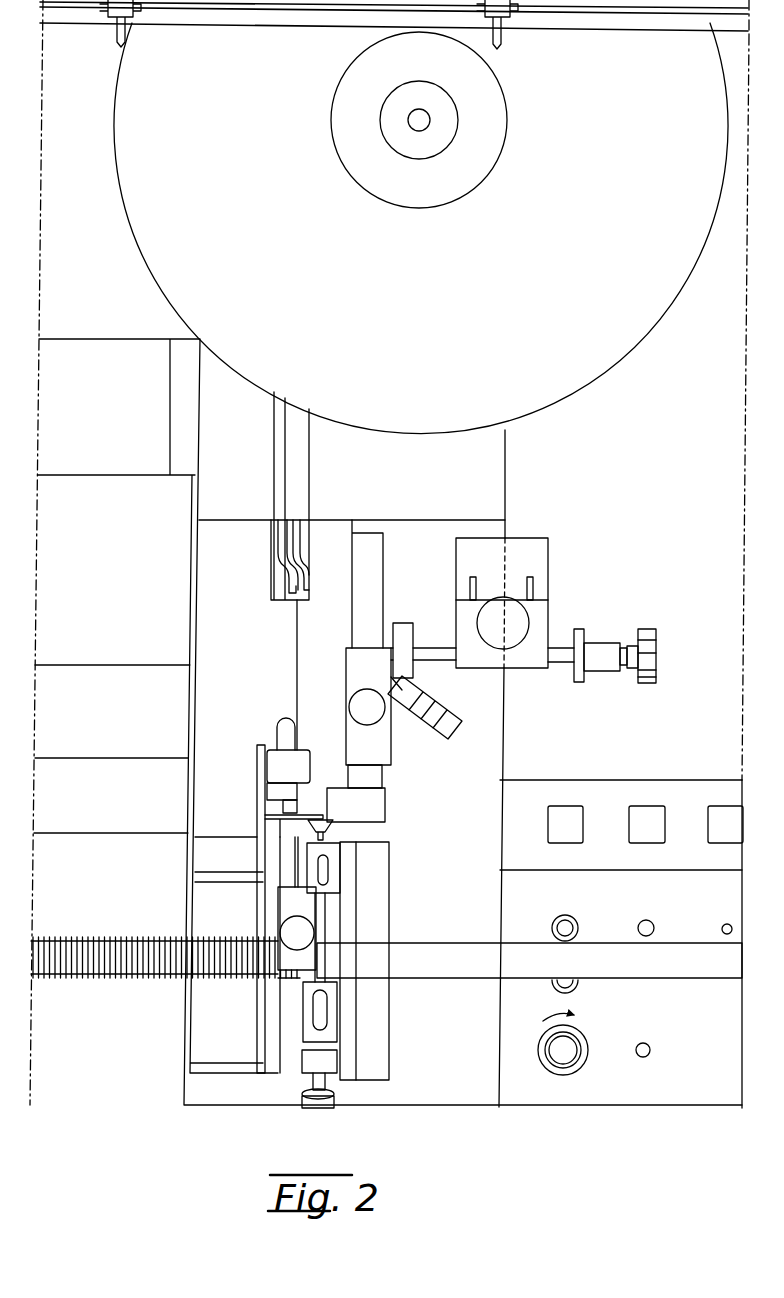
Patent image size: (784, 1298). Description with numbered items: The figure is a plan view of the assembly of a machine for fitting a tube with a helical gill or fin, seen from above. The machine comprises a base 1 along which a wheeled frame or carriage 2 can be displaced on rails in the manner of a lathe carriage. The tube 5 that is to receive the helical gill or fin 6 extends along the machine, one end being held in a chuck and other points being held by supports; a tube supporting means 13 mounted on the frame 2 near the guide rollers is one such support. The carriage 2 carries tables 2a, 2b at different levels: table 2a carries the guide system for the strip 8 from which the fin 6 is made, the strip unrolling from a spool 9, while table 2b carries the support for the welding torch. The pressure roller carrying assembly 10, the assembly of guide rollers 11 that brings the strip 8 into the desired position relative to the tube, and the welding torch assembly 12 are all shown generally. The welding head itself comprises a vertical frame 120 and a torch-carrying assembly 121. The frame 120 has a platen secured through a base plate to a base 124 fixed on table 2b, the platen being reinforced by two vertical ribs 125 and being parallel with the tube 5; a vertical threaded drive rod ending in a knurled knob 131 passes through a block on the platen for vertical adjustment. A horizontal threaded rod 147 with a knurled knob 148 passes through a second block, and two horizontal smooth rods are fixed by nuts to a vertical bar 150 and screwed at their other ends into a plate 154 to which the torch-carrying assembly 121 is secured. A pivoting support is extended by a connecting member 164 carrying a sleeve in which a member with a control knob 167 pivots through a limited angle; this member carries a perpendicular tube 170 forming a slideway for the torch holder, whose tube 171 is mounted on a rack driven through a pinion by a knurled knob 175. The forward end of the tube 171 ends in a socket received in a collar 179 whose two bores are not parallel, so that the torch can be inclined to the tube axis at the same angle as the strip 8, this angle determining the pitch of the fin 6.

The base 1 is at (87, 680).
The frame or carriage 2 is at (499, 746).
The table 2a is at (498, 462).
The table 2b is at (540, 737).
The tube 5 is at (470, 975).
The helical gill or fin 6 is at (116, 978).
The strip 8 is at (283, 442).
The spool 9 is at (641, 318).
The pressure roller carrying assembly 10 is at (261, 909).
The guide roller assembly 11 is at (256, 756).
The welding torch assembly 12 is at (430, 633).
The tube supporting means 13 is at (373, 928).
The vertical frame 120 is at (556, 590).
The torch-carrying assembly 121 is at (346, 684).
The base 124 is at (512, 540).
The vertical ribs 125 is at (518, 567).
The knurled knob 131 is at (523, 626).
The threaded rod 147 is at (563, 663).
The knurled knob 148 is at (656, 634).
The vertical bar 150 is at (580, 633).
The plate 154 is at (400, 630).
The connecting member 164 is at (425, 717).
The control knob 167 is at (350, 707).
The tube 170 is at (347, 661).
The tube 171 is at (381, 548).
The knurled knob 175 is at (460, 706).
The collar 179 is at (386, 800).